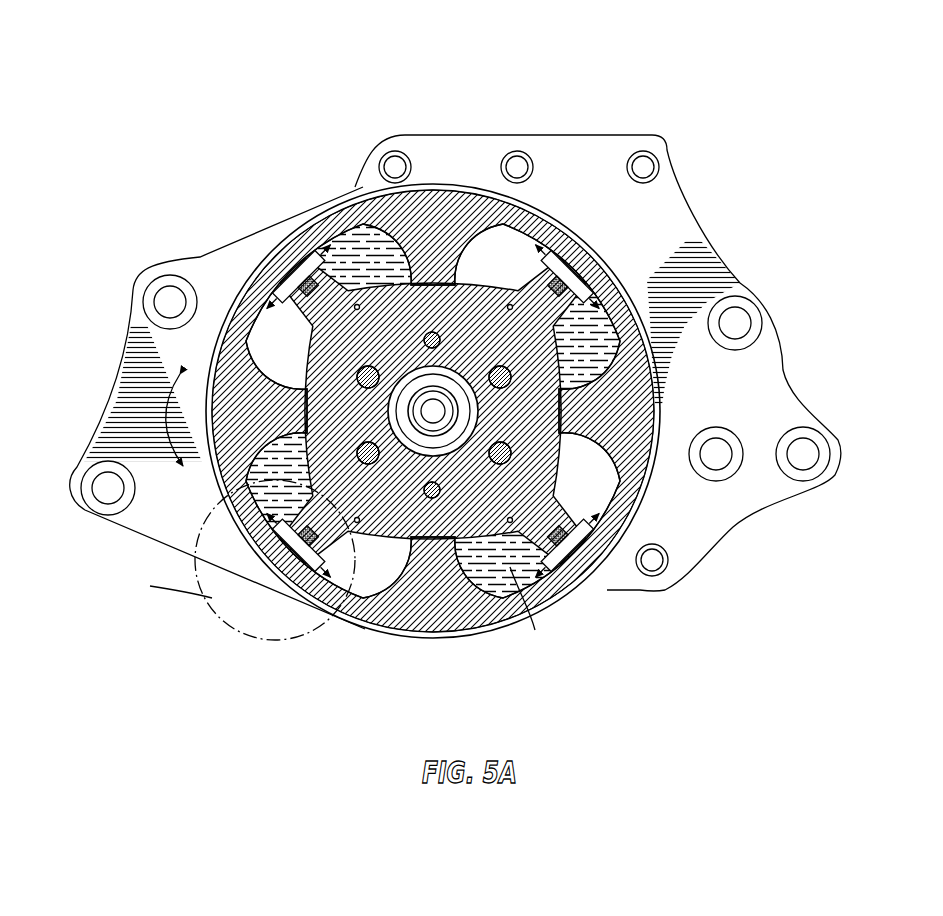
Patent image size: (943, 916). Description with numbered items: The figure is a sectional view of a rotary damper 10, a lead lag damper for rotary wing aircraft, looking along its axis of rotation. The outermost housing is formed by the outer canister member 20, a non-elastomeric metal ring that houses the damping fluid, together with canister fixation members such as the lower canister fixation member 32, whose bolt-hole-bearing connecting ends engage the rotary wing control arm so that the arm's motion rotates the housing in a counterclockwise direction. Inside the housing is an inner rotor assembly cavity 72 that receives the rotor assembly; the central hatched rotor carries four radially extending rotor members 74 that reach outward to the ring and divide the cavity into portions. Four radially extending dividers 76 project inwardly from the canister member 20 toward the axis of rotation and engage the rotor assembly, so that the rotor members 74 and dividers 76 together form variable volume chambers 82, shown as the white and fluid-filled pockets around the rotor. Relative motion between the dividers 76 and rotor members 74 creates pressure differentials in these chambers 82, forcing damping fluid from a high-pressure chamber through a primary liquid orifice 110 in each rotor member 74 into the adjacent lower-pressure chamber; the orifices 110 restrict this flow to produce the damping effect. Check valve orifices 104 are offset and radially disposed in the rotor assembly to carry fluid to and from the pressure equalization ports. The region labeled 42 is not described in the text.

The rotary damper 10 is at (205, 68).
The outer canister member 20 is at (467, 637).
The lower canister fixation member 32 is at (125, 455).
The mounting flange 42 is at (705, 510).
The inner rotor assembly cavity 72 is at (439, 424).
The radially extending rotor member 74 is at (467, 436).
The radially extending divider 76 is at (518, 399).
The variable volume chamber 82 is at (516, 246).
The check valve orifice 104 is at (360, 305).
The primary liquid orifice 110 is at (290, 266).